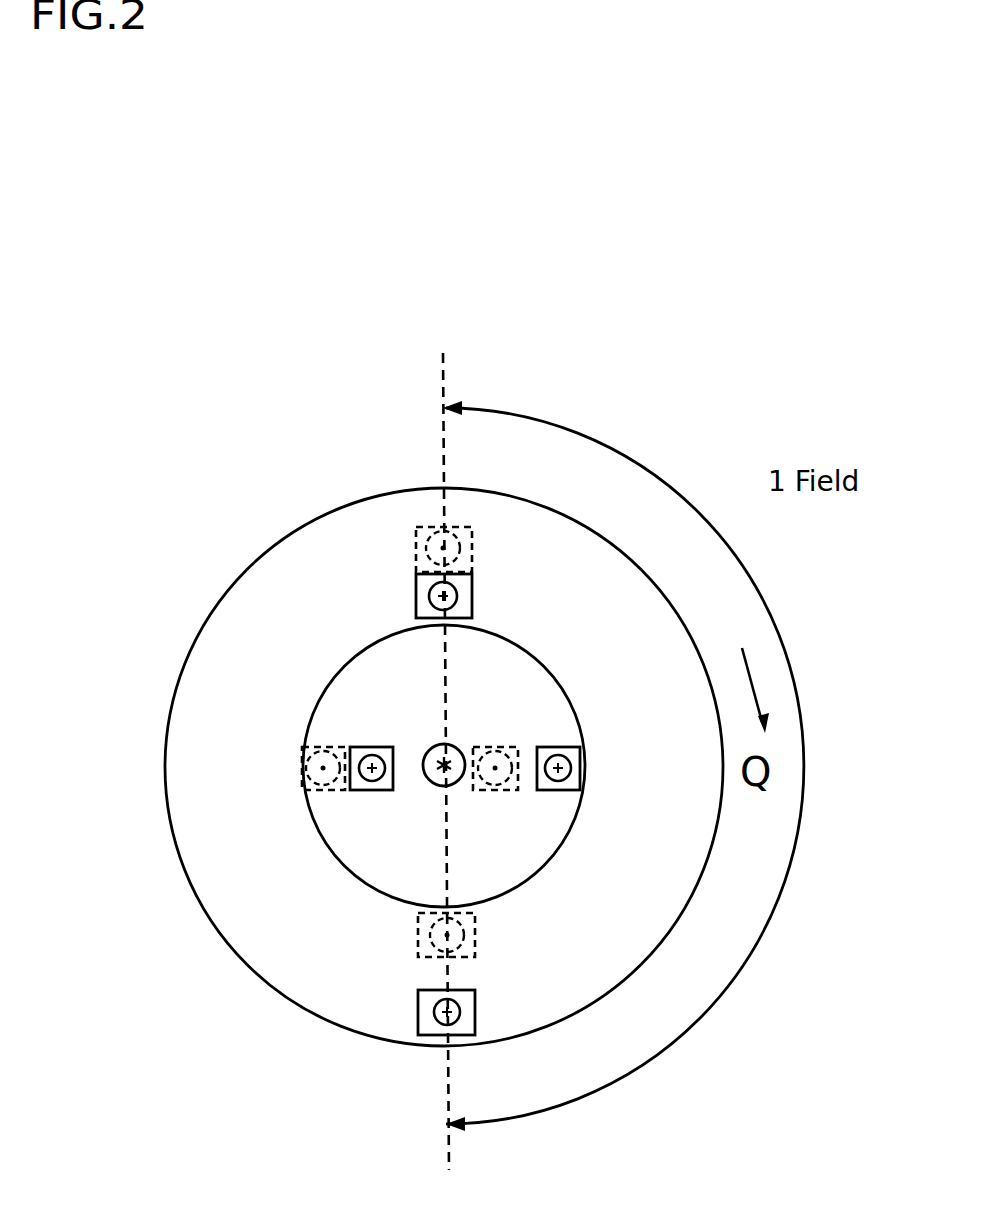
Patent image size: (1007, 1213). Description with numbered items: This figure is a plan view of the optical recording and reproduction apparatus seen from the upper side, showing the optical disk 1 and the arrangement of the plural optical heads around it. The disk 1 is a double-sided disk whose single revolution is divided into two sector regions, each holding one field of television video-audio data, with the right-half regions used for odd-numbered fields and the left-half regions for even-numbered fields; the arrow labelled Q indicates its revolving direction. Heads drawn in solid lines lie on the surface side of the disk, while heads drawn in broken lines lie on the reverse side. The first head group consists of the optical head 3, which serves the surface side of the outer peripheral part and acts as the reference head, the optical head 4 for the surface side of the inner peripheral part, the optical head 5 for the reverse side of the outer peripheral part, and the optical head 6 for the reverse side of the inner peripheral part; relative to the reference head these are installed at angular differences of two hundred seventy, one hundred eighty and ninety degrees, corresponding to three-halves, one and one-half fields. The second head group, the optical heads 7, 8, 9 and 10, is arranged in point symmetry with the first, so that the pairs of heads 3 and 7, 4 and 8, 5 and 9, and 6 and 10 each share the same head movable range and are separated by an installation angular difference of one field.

The optical disk 1 is at (247, 967).
The optical head 3 is at (475, 1008).
The optical head 4 is at (557, 748).
The optical head 5 is at (472, 549).
The optical head 6 is at (325, 792).
The optical head 7 is at (472, 600).
The optical head 8 is at (376, 747).
The optical head 9 is at (475, 937).
The optical head 10 is at (497, 792).